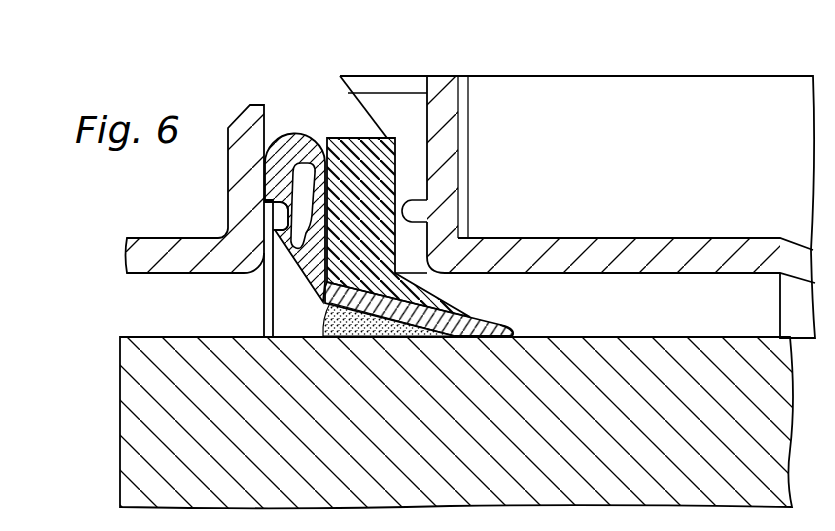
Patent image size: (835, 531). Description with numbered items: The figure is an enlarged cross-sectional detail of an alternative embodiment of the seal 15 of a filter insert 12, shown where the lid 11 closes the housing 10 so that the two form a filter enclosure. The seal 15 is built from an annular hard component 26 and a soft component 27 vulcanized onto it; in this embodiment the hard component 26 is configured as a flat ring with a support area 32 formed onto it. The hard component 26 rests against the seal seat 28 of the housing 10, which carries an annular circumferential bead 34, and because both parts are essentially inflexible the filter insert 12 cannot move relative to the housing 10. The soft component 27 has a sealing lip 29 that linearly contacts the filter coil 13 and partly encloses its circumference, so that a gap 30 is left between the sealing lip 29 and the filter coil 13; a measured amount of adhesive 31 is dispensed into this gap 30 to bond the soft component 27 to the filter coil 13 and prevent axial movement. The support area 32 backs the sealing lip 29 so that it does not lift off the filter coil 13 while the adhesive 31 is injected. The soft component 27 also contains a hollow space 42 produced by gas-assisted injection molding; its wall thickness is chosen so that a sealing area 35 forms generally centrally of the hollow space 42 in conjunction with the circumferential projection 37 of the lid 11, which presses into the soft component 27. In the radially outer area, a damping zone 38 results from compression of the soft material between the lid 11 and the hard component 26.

The housing 10 is at (703, 252).
The lid 11 is at (148, 250).
The filter insert 12 is at (114, 443).
The filter coil 13 is at (142, 373).
The seal 15 is at (280, 104).
The hard component 26 is at (382, 150).
The soft component 27 is at (308, 150).
The seal seat 28 is at (443, 90).
The sealing lip 29 is at (505, 327).
The gap 30 is at (310, 318).
The adhesive 31 is at (342, 337).
The support area 32 is at (478, 306).
The bead 34 is at (408, 208).
The sealing area 35 is at (277, 262).
The projection 37 is at (277, 210).
The damping zone 38 is at (295, 137).
The hollow space 42 is at (300, 180).